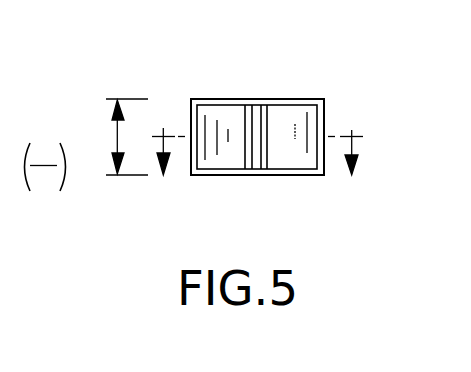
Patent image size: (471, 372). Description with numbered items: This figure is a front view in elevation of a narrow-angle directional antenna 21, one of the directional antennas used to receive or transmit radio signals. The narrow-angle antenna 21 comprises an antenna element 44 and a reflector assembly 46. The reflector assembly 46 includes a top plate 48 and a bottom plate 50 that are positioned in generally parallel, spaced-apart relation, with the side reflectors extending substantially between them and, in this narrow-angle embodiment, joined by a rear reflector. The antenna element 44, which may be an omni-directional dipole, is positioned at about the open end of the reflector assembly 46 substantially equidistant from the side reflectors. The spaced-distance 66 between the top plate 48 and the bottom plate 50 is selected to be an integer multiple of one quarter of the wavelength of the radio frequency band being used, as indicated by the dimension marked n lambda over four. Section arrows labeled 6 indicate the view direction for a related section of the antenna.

The narrow-angle antenna 21 is at (218, 121).
The antenna element 44 is at (256, 145).
The reflector assembly 46 is at (268, 97).
The top plate 48 is at (274, 115).
The bottom plate 50 is at (257, 168).
The section view arrows 6 is at (257, 166).
The spaced-distance 66 is at (87, 145).